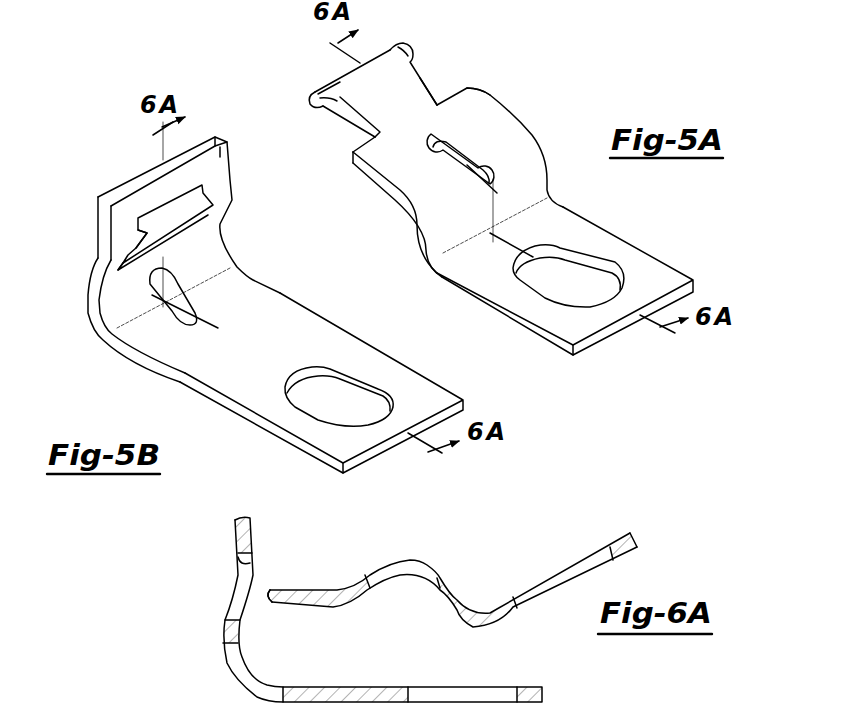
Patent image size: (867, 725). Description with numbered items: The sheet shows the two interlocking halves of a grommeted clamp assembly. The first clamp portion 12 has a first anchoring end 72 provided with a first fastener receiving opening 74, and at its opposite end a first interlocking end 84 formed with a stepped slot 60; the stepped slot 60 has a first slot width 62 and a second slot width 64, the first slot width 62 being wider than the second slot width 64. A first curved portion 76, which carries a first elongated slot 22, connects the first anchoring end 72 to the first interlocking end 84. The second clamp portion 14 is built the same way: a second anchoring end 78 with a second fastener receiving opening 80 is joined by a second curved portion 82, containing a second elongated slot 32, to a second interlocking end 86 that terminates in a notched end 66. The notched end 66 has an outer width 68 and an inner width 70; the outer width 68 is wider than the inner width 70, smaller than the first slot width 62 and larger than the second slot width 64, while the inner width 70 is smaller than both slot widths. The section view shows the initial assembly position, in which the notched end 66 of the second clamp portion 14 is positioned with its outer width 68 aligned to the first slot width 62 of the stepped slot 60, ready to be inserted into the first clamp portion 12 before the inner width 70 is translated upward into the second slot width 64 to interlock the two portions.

In FIG. 5B, the first clamp portion 12 is at (244, 285).
In FIG. 6A, the first clamp portion 12 is at (355, 609).
In FIG. 5A, the second clamp portion 14 is at (475, 179).
In FIG. 6A, the second clamp portion 14 is at (449, 571).
In FIG. 5B, the first elongated slot 22 is at (197, 297).
In FIG. 5A, the second elongated slot 32 is at (477, 153).
In FIG. 5B, the stepped slot 60 is at (158, 213).
In FIG. 6A, the stepped slot 60 is at (240, 567).
In FIG. 5B, the first slot width 62 is at (130, 260).
In FIG. 5B, the second slot width 64 is at (147, 233).
In FIG. 5A, the notched end 66 is at (342, 75).
In FIG. 6A, the notched end 66 is at (268, 597).
In FIG. 5A, the outer width 68 is at (408, 48).
In FIG. 5A, the inner width 70 is at (428, 74).
In FIG. 5B, the first anchoring end 72 is at (153, 363).
In FIG. 5B, the first fastener receiving opening 74 is at (378, 393).
In FIG. 5B, the first curved portion 76 is at (97, 312).
In FIG. 5A, the second anchoring end 78 is at (673, 265).
In FIG. 5A, the second fastener receiving opening 80 is at (603, 273).
In FIG. 5A, the second curved portion 82 is at (487, 90).
In FIG. 5B, the first interlocking end 84 is at (208, 137).
In FIG. 5A, the second interlocking end 86 is at (387, 50).